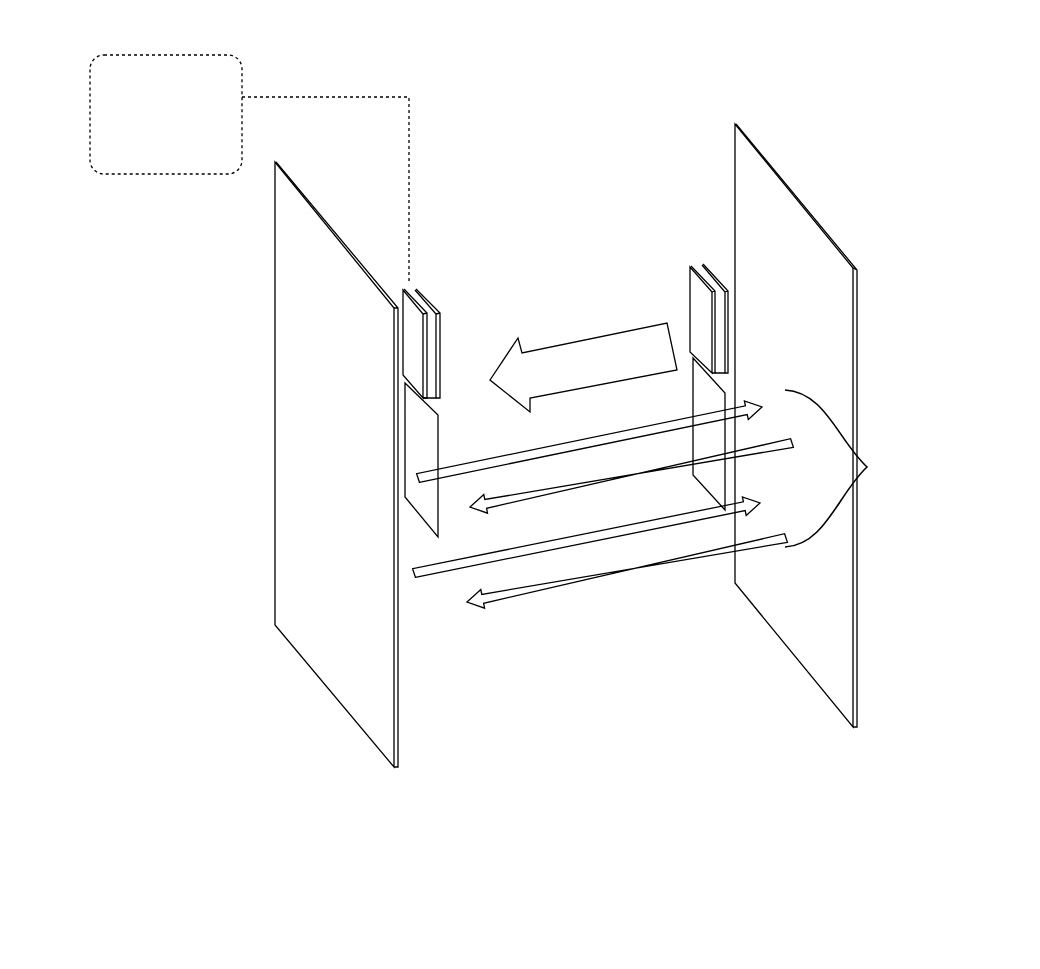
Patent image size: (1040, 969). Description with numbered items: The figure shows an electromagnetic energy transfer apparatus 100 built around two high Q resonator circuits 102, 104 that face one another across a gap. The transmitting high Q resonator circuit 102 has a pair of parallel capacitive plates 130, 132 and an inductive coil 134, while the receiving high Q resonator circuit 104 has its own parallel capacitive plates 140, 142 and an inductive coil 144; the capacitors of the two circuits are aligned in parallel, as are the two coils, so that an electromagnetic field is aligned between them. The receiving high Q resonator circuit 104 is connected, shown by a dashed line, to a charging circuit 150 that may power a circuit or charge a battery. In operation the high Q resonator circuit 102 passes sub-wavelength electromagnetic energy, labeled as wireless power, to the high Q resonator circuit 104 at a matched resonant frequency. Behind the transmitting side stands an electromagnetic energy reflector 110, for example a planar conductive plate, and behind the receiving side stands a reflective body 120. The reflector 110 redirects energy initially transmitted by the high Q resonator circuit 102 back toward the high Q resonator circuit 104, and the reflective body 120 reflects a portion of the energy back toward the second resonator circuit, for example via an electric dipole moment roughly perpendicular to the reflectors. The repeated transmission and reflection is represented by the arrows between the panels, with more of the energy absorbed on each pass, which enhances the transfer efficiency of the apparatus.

The electromagnetic energy transfer apparatus 100 is at (953, 63).
The high Q resonator circuit 102 is at (647, 140).
The high Q resonator circuit 104 is at (444, 190).
The electromagnetic energy reflector 110 is at (788, 187).
The reflective body 120 is at (335, 236).
The capacitive plate 130 is at (718, 270).
The capacitive plate 132 is at (692, 264).
The inductive coil 134 is at (699, 486).
The capacitive plate 140 is at (405, 288).
The capacitive plate 142 is at (435, 311).
The inductive coil 144 is at (438, 413).
The charging circuit 150 is at (199, 56).